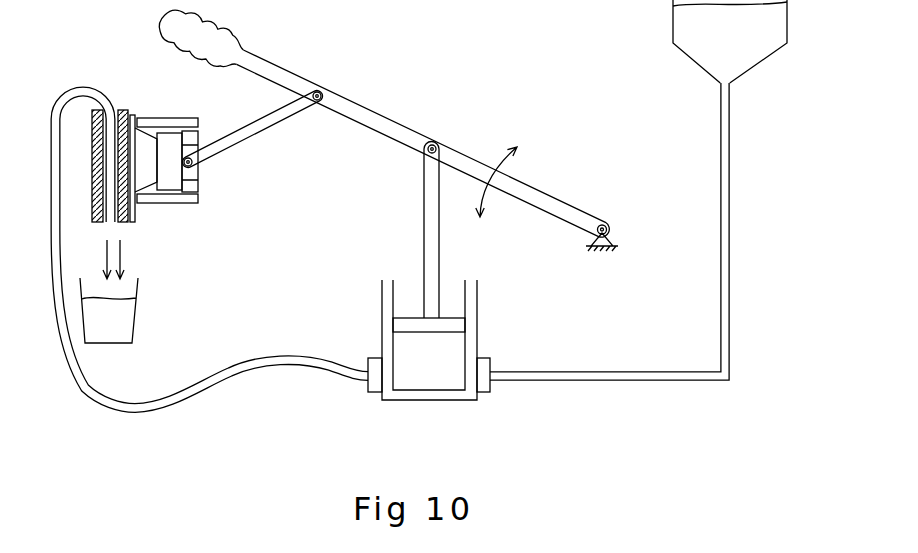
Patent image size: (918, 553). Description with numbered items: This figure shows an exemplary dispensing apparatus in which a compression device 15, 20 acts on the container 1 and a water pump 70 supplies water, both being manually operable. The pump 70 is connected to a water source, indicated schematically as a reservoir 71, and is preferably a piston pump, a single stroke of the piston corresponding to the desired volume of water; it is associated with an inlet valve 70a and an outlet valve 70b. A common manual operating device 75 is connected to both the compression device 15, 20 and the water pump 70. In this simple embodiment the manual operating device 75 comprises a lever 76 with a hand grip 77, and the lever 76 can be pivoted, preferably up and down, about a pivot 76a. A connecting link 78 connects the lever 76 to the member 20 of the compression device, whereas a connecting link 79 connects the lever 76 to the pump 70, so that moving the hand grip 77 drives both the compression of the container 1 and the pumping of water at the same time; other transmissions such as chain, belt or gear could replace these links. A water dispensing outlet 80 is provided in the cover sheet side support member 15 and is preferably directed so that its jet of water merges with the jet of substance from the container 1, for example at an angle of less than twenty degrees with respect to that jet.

The container 1 is at (145, 177).
The cover sheet side support member 15 is at (93, 140).
The member 20 is at (195, 177).
The water pump 70 is at (428, 417).
The inlet valve 70a is at (477, 395).
The outlet valve 70b is at (373, 393).
The reservoir 71 is at (745, 50).
The manual operating device 75 is at (396, 96).
The lever 76 is at (297, 77).
The pivot 76a is at (608, 224).
The hand grip 77 is at (198, 24).
The connecting link 78 is at (268, 128).
The connecting link 79 is at (427, 193).
The water dispensing outlet 80 is at (112, 228).